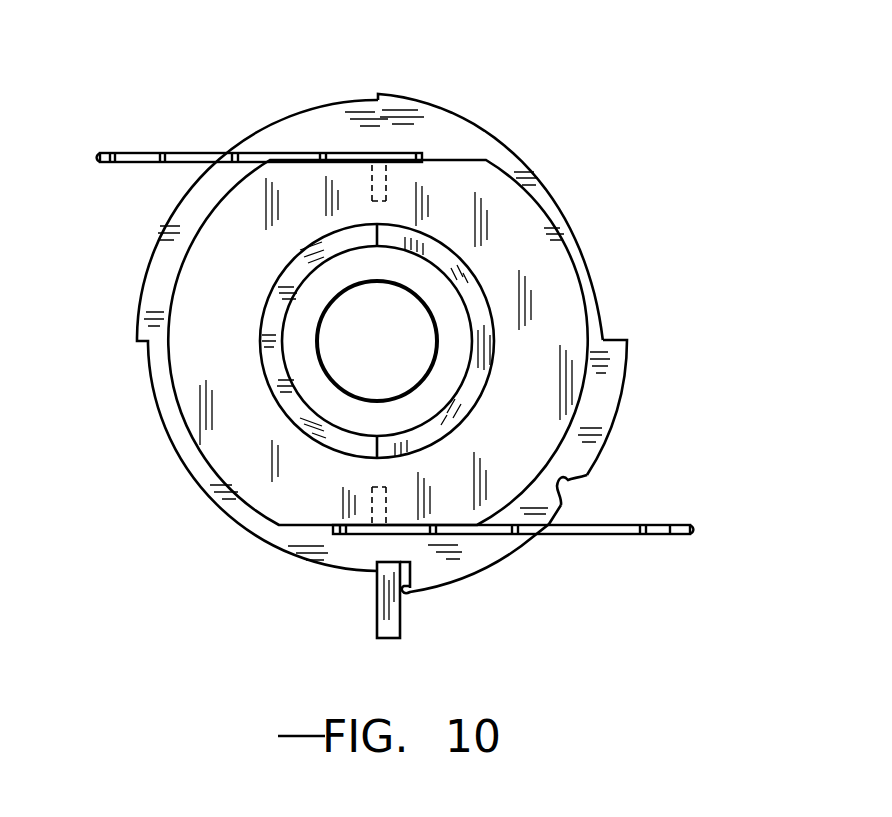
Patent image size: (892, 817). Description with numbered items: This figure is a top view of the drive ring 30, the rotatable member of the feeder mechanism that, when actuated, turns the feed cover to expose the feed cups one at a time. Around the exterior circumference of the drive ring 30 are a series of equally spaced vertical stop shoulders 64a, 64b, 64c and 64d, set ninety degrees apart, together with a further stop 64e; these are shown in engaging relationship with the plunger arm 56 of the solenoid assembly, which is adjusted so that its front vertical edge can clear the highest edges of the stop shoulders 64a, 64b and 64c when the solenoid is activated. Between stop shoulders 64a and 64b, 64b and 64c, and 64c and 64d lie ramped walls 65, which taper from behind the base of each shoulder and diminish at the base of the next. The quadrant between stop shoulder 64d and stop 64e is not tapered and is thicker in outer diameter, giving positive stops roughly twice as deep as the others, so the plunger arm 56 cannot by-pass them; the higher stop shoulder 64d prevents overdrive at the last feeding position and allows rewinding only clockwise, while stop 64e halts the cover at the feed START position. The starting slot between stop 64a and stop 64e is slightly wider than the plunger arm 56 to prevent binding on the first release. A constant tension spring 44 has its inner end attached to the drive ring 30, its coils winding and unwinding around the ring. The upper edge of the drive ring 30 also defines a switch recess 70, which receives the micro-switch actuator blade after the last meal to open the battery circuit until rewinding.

The drive ring 30 is at (493, 112).
The ramped walls 65 is at (172, 234).
The stop shoulder 64a is at (378, 557).
The stop shoulder 64b is at (140, 343).
The stop shoulder 64c is at (378, 100).
The stop shoulder 64d is at (612, 338).
The stop 64e is at (412, 592).
The switch recess 70 is at (555, 490).
The plunger arm 56 is at (377, 606).
The constant tension spring 44 is at (634, 535).